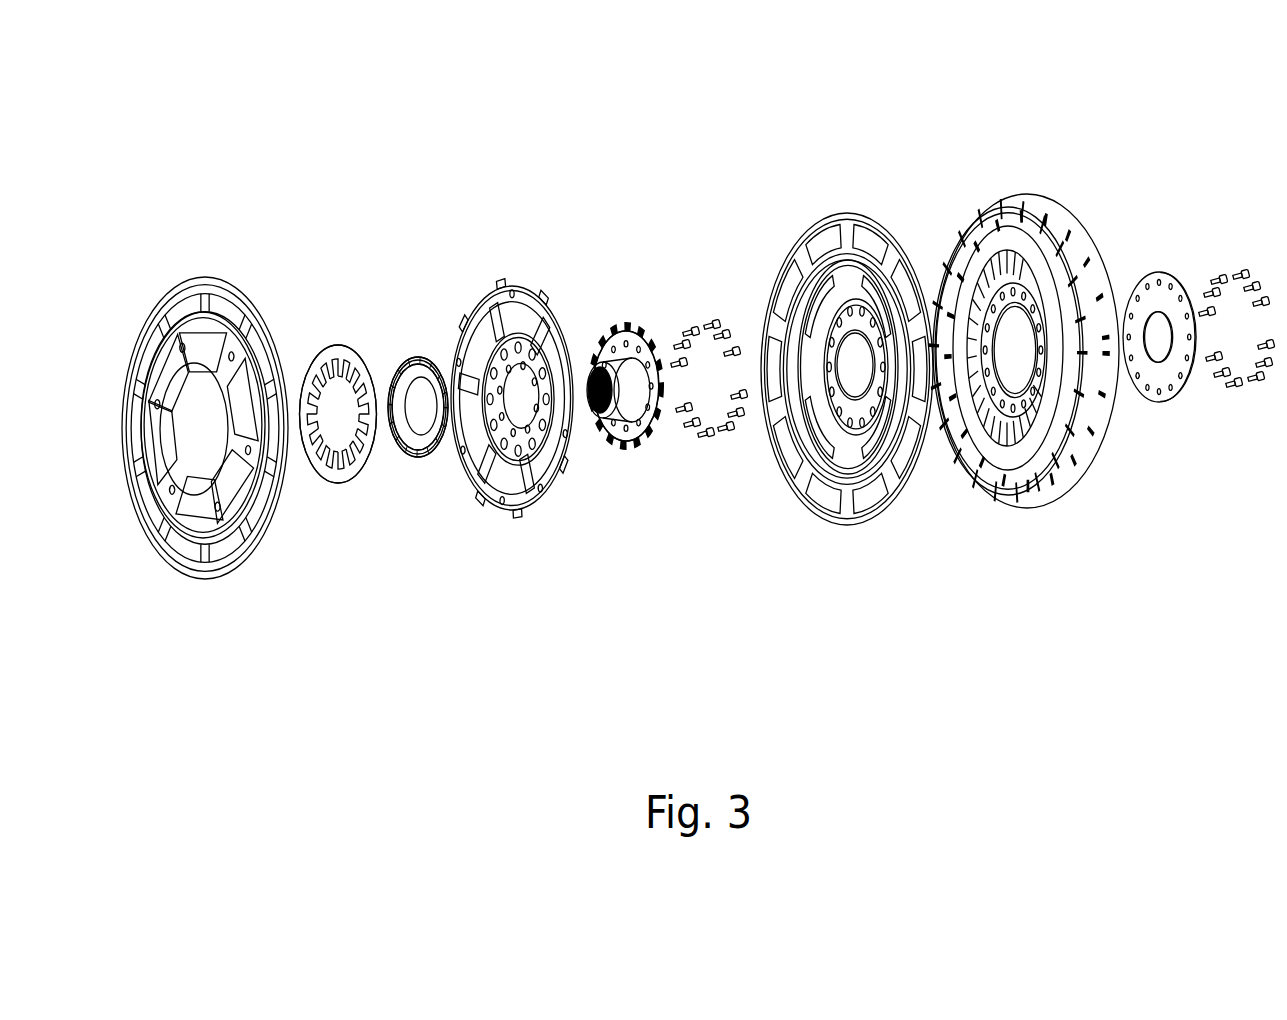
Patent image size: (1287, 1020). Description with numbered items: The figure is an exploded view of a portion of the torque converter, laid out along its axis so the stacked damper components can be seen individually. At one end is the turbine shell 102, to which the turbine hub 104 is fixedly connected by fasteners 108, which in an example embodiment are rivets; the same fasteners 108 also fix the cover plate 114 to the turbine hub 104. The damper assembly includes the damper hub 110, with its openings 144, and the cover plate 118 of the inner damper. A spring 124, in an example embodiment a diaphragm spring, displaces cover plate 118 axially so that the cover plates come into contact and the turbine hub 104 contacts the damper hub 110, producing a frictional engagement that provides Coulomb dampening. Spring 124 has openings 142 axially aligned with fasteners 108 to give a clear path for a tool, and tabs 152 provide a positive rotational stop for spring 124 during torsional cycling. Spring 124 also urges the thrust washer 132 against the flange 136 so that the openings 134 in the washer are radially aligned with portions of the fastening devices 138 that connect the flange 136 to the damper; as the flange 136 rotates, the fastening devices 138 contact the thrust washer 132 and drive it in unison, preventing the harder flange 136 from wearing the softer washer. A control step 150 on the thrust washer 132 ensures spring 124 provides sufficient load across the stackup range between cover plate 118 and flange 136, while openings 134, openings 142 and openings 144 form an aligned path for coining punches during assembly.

The turbine shell 102 is at (1022, 197).
The turbine hub 104 is at (1160, 273).
The fasteners 108 is at (1245, 246).
The damper hub 110 is at (621, 305).
The cover plate 114 is at (830, 207).
The cover plate 118 is at (190, 277).
The spring 124 is at (345, 330).
The thrust washer 132 is at (427, 338).
The openings 134 is at (398, 373).
The flange 136 is at (530, 285).
The fastening devices 138 is at (710, 296).
The openings 142 is at (302, 375).
The openings 144 is at (658, 423).
The control step 150 is at (397, 438).
The tabs 152 is at (393, 367).